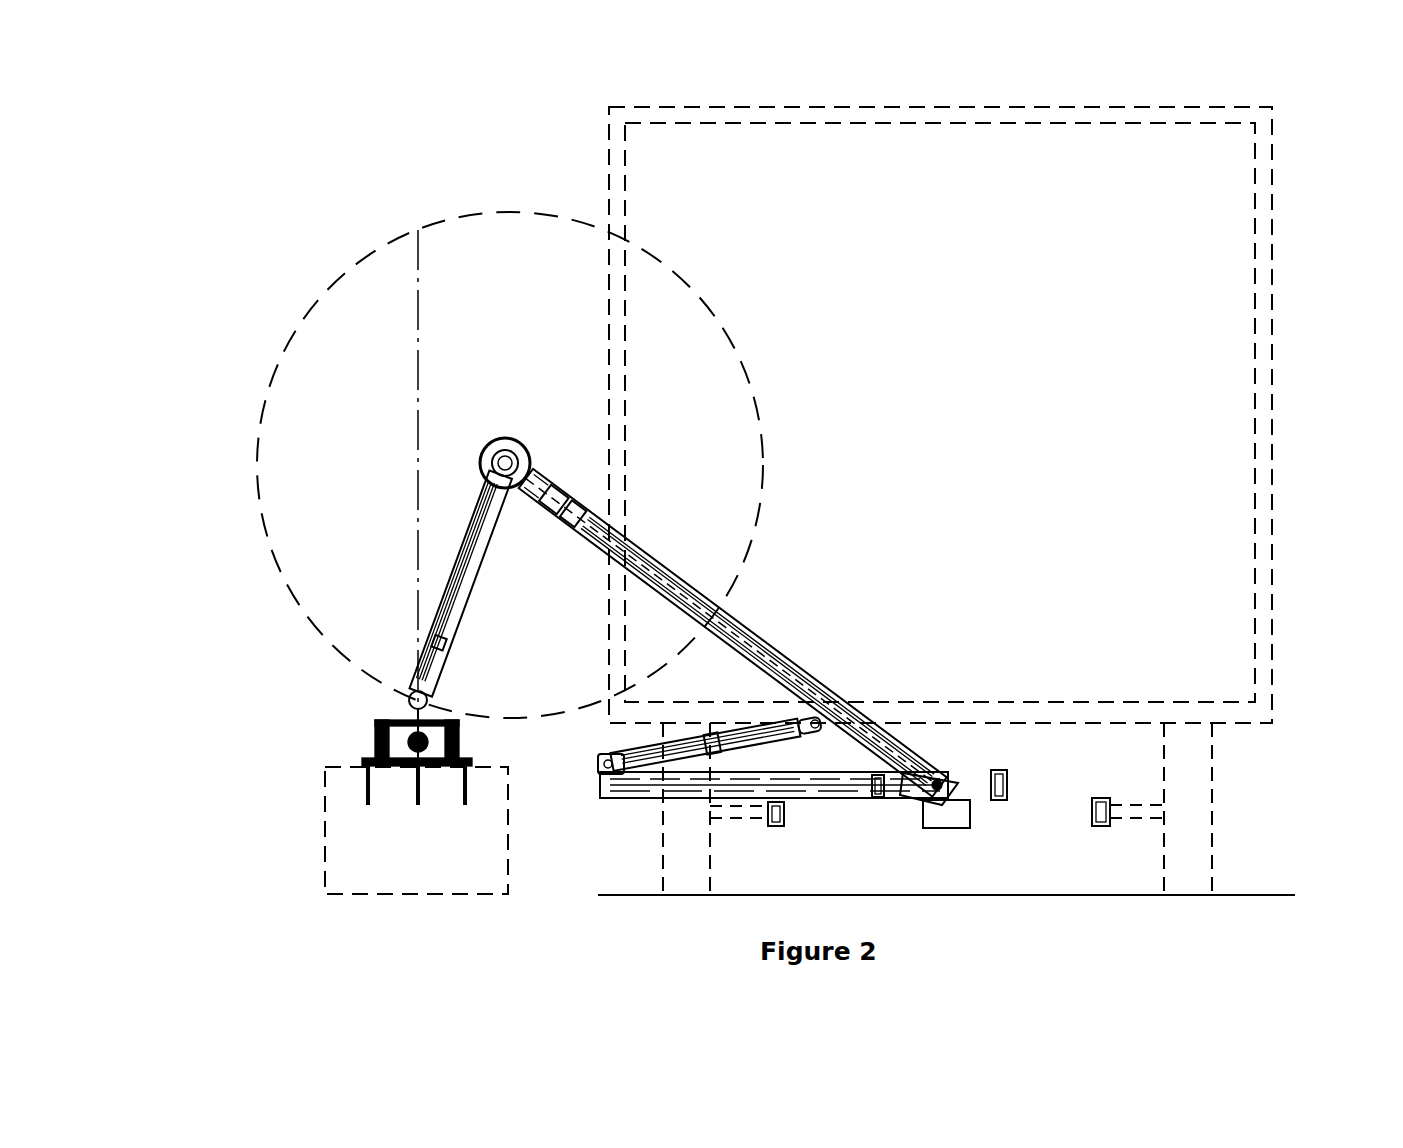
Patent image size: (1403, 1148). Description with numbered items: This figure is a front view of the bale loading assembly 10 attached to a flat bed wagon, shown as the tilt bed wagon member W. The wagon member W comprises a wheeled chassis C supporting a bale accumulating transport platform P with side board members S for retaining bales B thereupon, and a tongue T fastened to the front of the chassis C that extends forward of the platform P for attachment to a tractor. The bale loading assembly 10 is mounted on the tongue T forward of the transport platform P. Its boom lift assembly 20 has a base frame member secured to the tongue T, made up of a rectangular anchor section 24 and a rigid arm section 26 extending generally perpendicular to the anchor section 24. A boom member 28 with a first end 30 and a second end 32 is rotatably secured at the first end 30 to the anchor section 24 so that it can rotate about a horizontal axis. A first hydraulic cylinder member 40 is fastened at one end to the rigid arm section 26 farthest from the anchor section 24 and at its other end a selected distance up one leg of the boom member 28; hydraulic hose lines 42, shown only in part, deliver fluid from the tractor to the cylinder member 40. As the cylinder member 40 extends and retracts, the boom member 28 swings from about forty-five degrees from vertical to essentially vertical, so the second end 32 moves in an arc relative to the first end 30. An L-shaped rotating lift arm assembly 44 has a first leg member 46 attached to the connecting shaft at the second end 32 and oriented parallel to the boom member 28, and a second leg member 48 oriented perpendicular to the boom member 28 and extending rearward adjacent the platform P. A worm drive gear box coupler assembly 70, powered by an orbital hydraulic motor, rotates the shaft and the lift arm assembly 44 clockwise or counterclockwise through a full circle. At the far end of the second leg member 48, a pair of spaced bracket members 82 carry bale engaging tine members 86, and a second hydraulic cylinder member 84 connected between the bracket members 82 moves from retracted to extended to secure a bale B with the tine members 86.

The bale loading assembly 10 is at (810, 455).
The boom lift assembly 20 is at (830, 605).
The rectangular anchor section 24 is at (878, 798).
The rigid arm section 26 is at (635, 792).
The boom member 28 is at (760, 615).
The first end 30 is at (912, 775).
The second end 32 is at (555, 488).
The first hydraulic cylinder member 40 is at (730, 748).
The hydraulic hose lines 42 is at (612, 745).
The L-shaped rotating lift arm assembly 44 is at (440, 505).
The first leg member 46 is at (462, 578).
The second leg member 48 is at (400, 695).
The worm drive gear box coupler assembly 70 is at (490, 450).
The bracket members 82 is at (378, 742).
The second hydraulic cylinder member 84 is at (428, 740).
The bale engaging tine members 86 is at (414, 800).
The side board members S is at (617, 168).
The bales B is at (416, 830).
The wheeled chassis C is at (784, 818).
The transport platform P is at (968, 710).
The tongue T is at (960, 812).
The tilt bed wagon member W is at (1300, 633).